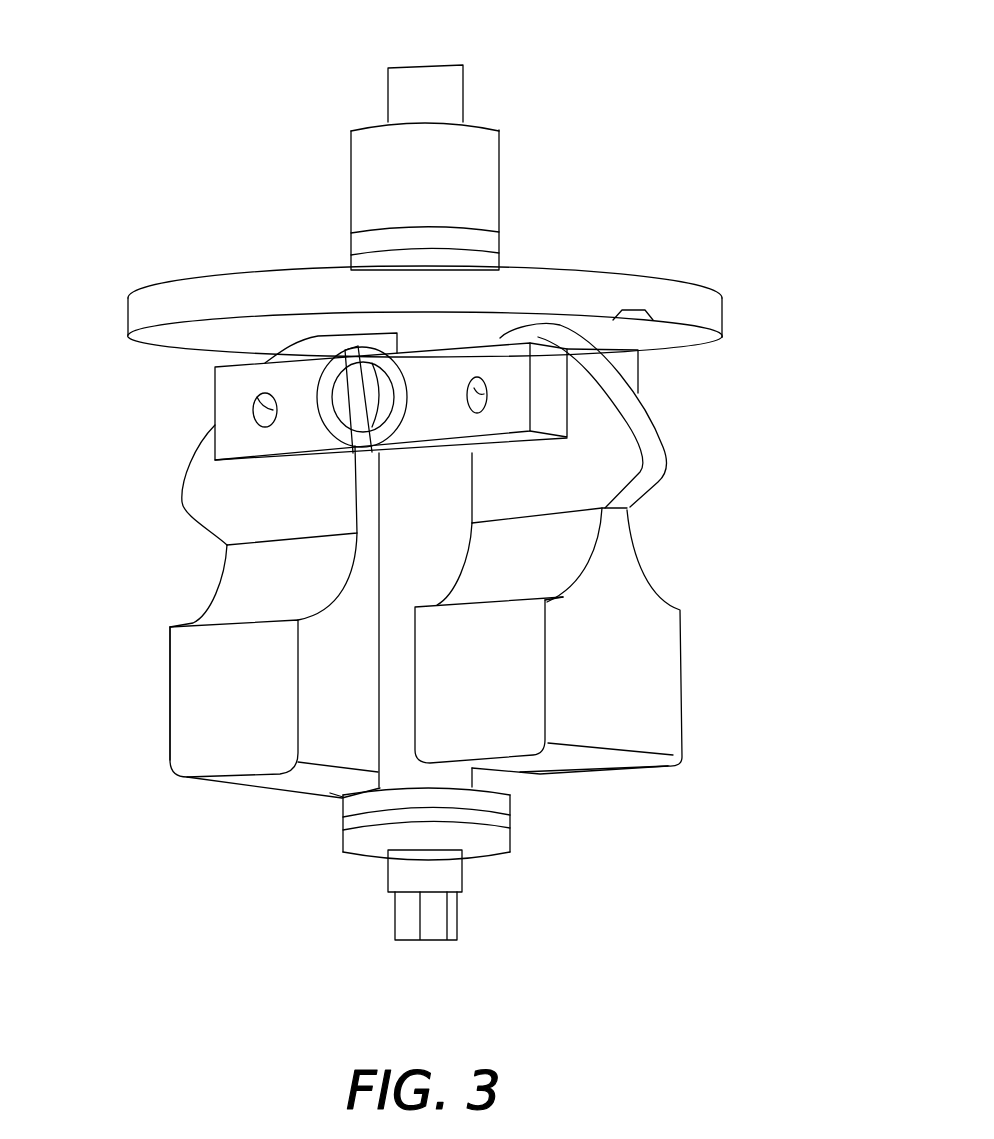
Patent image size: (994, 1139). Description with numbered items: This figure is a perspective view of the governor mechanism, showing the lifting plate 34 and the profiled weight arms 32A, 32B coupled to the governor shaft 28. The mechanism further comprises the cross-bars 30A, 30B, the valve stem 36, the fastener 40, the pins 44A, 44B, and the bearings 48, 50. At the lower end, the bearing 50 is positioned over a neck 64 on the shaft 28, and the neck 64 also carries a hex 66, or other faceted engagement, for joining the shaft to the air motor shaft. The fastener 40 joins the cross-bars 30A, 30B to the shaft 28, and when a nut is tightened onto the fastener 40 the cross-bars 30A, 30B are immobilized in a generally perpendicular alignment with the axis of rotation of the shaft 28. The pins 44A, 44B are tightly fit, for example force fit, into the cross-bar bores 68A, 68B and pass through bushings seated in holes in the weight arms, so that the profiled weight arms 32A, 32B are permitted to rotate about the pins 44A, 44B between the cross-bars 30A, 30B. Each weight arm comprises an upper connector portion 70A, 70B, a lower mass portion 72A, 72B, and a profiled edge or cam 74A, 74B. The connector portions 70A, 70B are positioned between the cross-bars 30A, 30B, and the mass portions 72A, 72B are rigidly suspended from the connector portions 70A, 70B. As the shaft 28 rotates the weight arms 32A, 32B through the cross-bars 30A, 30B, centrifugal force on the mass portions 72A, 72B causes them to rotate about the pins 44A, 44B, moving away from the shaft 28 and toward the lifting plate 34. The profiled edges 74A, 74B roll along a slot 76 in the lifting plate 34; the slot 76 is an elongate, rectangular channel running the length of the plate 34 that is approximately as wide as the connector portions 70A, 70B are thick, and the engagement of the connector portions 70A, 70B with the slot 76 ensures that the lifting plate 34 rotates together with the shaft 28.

The governor shaft 28 is at (444, 507).
The cross-bar 30A is at (550, 420).
The cross-bar 30B is at (627, 365).
The profiled weight arm 32A is at (680, 693).
The profiled weight arm 32B is at (165, 757).
The lifting plate 34 is at (712, 284).
The valve stem 36 is at (505, 138).
The fastener 40 is at (330, 422).
The pin 44A is at (478, 383).
The pin 44B is at (258, 402).
The bearing 48 is at (483, 243).
The bearing 50 is at (350, 840).
The neck 64 is at (447, 875).
The hex 66 is at (437, 923).
The cross-bar bore 68A is at (466, 408).
The cross-bar bore 68B is at (283, 418).
The upper connector portion 70A is at (551, 490).
The upper connector portion 70B is at (317, 505).
The lower mass portion 72A is at (491, 682).
The lower mass portion 72B is at (261, 696).
The profiled edge 74A is at (653, 447).
The profiled edge 74B is at (197, 455).
The slot 76 is at (635, 310).